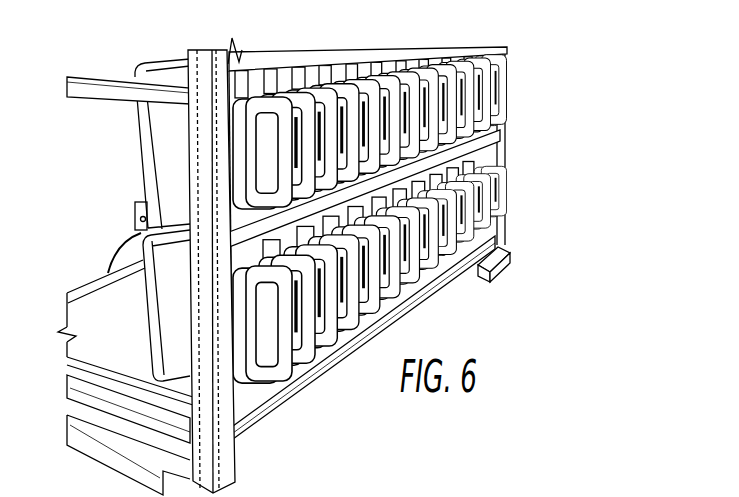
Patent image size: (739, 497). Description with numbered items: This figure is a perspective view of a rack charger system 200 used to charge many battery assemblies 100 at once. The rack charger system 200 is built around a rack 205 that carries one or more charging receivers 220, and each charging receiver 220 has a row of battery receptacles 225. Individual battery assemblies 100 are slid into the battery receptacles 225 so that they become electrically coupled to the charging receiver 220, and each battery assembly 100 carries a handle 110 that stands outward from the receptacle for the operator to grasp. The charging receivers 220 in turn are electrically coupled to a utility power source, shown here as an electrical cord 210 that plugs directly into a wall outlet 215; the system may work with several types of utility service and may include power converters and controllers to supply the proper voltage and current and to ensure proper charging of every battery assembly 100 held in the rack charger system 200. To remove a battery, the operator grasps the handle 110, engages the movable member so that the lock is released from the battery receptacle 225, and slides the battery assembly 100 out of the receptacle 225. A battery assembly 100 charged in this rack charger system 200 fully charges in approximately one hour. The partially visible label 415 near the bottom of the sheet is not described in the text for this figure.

The battery assembly 100 is at (490, 52).
The handle 110 is at (507, 90).
The rack charger system 200 is at (605, 117).
The rack 205 is at (203, 183).
The electrical cord 210 is at (108, 273).
The wall outlet 215 is at (135, 207).
The charging receiver 220 is at (162, 134).
The battery receptacle 225 is at (245, 107).
The support 415 is at (504, 490).